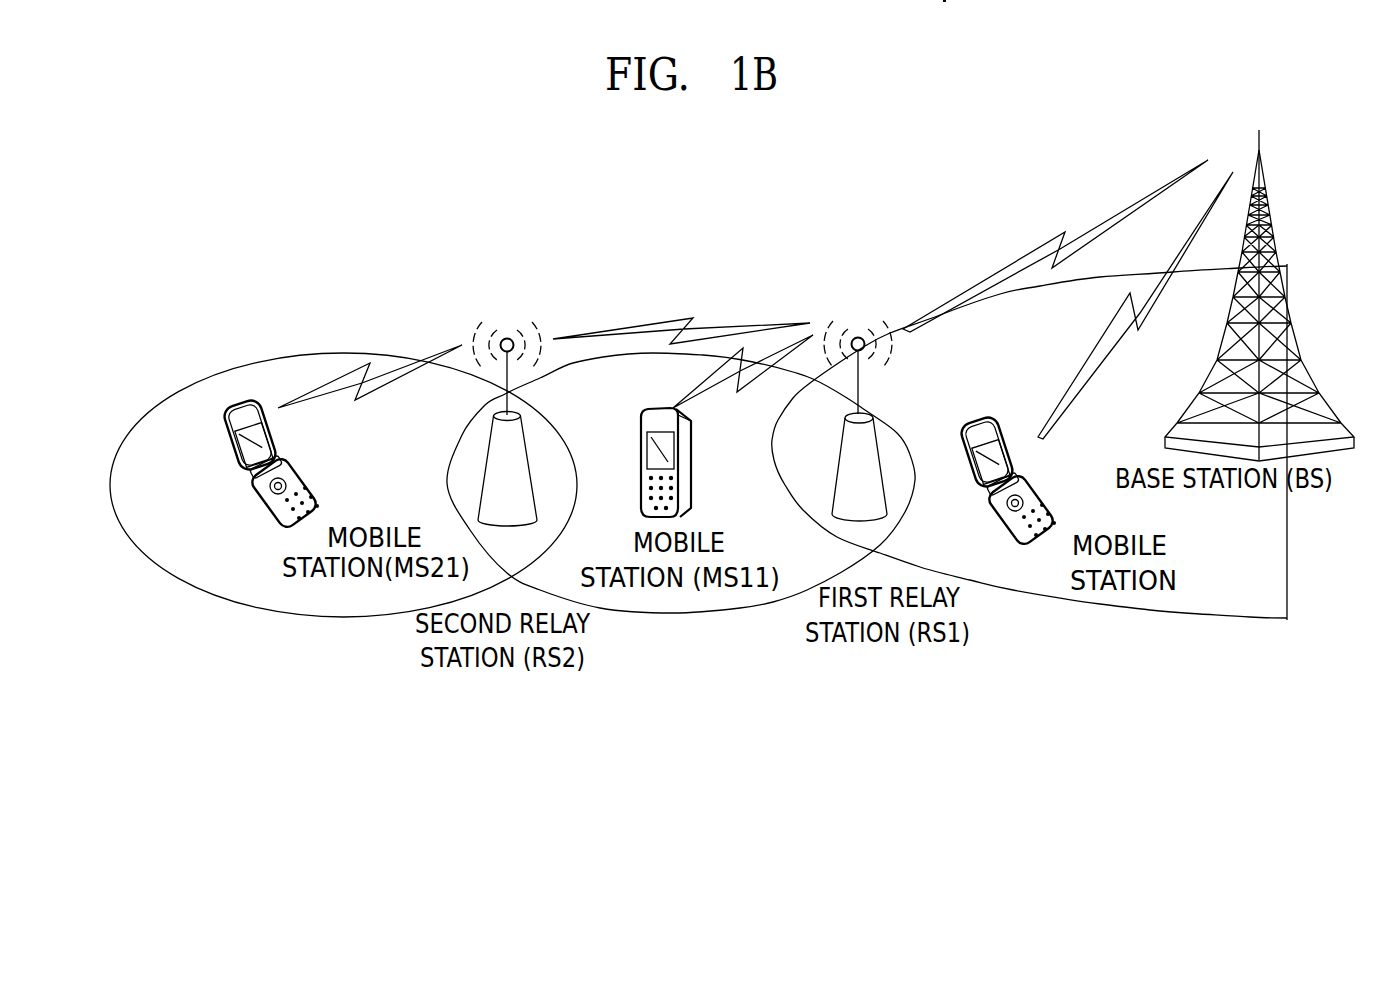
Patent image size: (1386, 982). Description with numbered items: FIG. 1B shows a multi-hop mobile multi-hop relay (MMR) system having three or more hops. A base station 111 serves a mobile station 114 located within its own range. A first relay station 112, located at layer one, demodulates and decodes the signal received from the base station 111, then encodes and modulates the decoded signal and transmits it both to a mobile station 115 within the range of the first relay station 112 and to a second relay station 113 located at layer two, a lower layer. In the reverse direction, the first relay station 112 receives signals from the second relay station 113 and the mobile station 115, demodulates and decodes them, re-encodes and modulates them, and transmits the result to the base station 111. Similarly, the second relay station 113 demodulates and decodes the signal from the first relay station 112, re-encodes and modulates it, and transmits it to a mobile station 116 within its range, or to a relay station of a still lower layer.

The base station 111 is at (1262, 192).
The first relay station 112 is at (879, 434).
The second relay station 113 is at (495, 452).
The mobile station 114 is at (1000, 425).
The mobile station 115 is at (693, 472).
The mobile station 116 is at (247, 472).